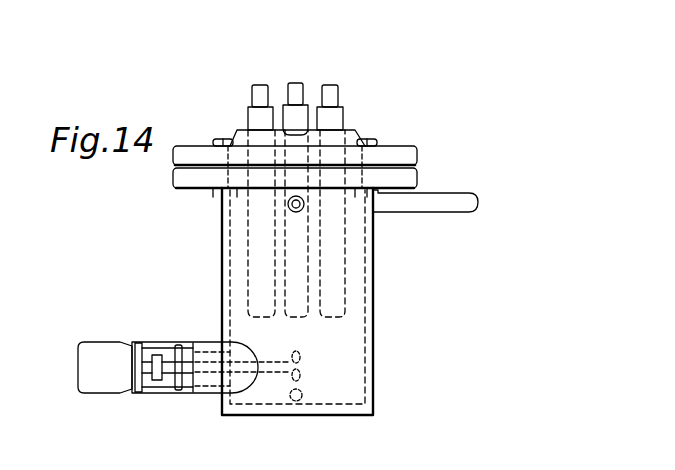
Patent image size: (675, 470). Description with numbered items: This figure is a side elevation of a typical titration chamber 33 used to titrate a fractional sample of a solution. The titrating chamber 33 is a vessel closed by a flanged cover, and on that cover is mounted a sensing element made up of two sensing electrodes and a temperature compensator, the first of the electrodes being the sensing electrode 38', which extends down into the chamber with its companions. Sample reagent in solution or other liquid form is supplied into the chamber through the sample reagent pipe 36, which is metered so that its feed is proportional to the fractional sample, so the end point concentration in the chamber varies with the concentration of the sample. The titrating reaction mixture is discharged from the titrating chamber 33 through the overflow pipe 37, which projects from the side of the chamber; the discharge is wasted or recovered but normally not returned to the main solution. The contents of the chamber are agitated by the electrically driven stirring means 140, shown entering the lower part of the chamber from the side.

The titrating chamber 33 is at (365, 252).
The sample reagent pipe 36 is at (290, 207).
The overflow pipe 37 is at (432, 200).
The sensing electrode 38' is at (210, 95).
The electrically driven stirring means 140 is at (210, 340).